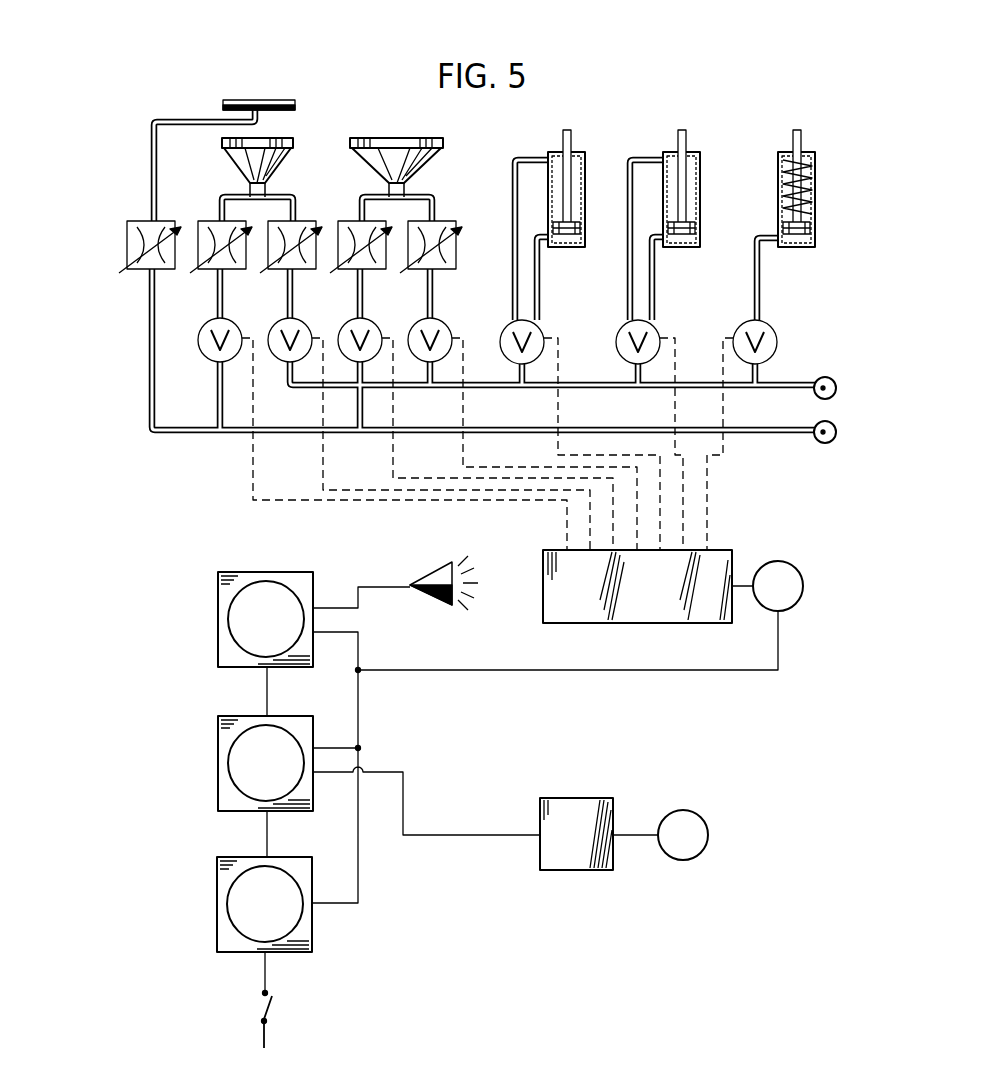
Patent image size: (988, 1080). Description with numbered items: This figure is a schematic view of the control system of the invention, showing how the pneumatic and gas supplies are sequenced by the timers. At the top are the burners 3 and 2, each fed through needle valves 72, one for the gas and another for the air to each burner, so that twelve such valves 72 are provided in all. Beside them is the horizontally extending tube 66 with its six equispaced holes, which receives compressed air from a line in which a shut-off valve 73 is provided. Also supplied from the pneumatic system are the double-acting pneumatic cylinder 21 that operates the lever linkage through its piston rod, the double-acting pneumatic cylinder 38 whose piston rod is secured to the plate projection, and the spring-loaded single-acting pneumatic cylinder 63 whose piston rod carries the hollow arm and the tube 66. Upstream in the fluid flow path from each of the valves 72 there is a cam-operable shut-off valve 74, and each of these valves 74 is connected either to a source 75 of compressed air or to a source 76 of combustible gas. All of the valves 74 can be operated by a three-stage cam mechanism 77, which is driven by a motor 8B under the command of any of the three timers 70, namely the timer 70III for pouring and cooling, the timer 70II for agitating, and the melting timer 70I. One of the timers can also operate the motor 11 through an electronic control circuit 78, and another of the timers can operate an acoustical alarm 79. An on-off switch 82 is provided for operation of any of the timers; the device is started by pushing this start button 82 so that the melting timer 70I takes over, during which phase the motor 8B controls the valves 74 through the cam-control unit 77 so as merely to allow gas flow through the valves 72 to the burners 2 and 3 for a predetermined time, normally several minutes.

The horizontally extending tube 66 is at (286, 103).
The burner 3 is at (284, 166).
The burner 2 is at (432, 166).
The shut-off valve 73 is at (160, 220).
The needle valve 72 is at (212, 220).
The double-acting pneumatic cylinder 21 is at (585, 163).
The double-acting pneumatic cylinder 38 is at (700, 163).
The spring-loaded pneumatic cylinder 63 is at (817, 163).
The cam-operable shut-off valve 74 is at (205, 338).
The source of compressed air 75 is at (825, 377).
The source of combustible gas 76 is at (825, 444).
The three-stage cam mechanism 77 is at (552, 584).
The motor 8B is at (800, 578).
The acoustical alarm 79 is at (435, 582).
The timers 70 is at (175, 747).
The timer 70III is at (222, 598).
The timer 70II is at (222, 742).
The melting timer 70I is at (222, 876).
The on-off switch 82 is at (262, 1003).
The electronic control circuit 78 is at (590, 798).
The motor 11 is at (684, 810).